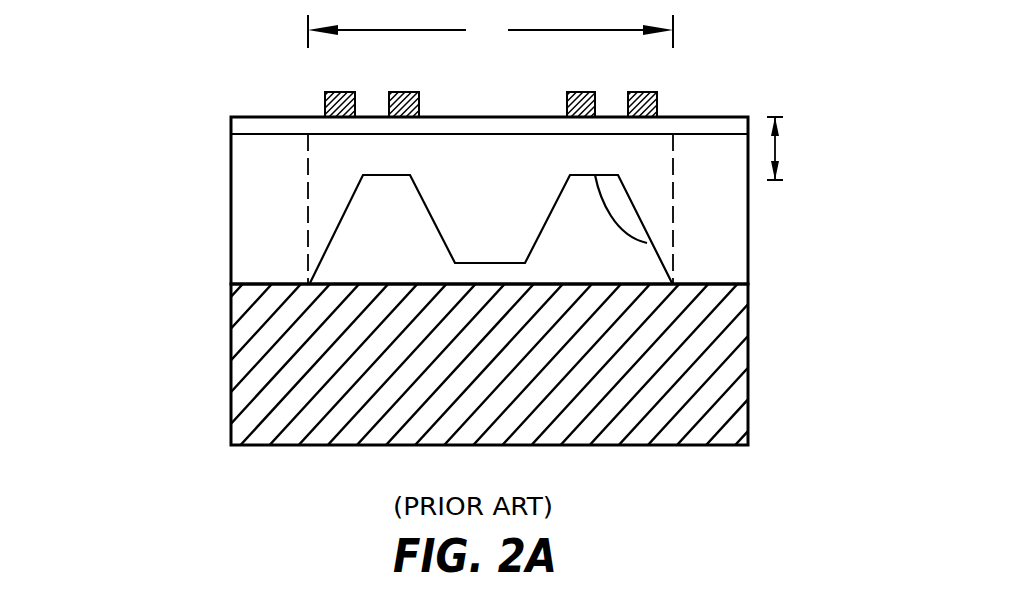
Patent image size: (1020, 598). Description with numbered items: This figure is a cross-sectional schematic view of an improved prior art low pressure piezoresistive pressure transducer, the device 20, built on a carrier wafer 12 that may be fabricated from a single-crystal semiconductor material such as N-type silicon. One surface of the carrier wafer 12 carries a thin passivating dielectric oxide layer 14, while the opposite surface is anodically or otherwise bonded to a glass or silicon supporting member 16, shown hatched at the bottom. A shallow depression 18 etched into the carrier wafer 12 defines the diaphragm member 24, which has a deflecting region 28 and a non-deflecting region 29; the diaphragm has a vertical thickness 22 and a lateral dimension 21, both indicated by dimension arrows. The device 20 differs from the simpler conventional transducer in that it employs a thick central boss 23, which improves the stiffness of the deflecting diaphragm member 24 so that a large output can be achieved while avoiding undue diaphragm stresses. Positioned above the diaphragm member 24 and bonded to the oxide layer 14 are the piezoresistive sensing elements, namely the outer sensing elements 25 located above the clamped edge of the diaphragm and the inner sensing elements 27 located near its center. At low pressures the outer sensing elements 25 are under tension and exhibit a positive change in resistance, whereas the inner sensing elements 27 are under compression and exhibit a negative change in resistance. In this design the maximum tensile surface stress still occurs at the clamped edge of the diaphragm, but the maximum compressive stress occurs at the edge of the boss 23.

The carrier wafer 12 is at (213, 285).
The passivating dielectric oxide layer 14 is at (253, 130).
The supporting member 16 is at (697, 368).
The shallow depression 18 is at (392, 215).
The device 20 is at (211, 388).
The lateral dimension 21 is at (490, 31).
The vertical thickness 22 is at (796, 148).
The thick central boss 23 is at (498, 235).
The diaphragm member 24 is at (615, 153).
The outer sensing elements 25 is at (643, 92).
The inner sensing elements 27 is at (583, 92).
The deflecting region 28 is at (647, 243).
The non-deflecting region 29 is at (702, 200).